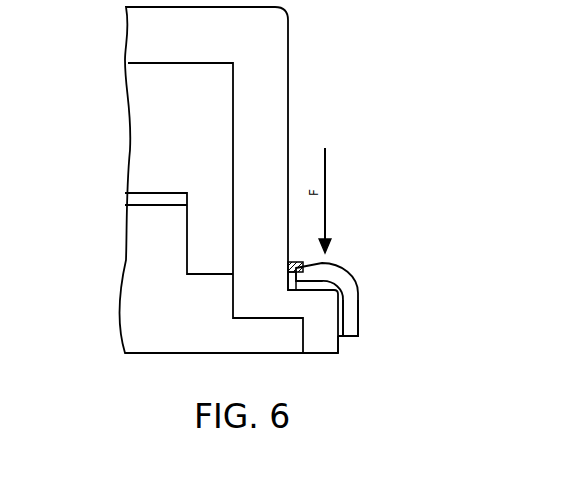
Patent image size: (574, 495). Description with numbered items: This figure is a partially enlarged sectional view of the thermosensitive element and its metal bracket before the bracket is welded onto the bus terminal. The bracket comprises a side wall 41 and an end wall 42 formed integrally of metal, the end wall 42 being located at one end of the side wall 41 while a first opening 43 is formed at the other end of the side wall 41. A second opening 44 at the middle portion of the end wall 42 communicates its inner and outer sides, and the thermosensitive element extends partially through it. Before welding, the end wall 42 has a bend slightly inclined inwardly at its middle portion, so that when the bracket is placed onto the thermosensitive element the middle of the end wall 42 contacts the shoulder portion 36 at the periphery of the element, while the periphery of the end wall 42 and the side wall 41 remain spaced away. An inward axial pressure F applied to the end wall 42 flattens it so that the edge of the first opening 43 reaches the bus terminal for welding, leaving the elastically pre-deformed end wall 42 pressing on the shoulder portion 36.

The shoulder portion 36 is at (332, 268).
The side wall 41 is at (350, 318).
The end wall 42 is at (304, 260).
The first opening 43 is at (343, 337).
The second opening 44 is at (290, 277).